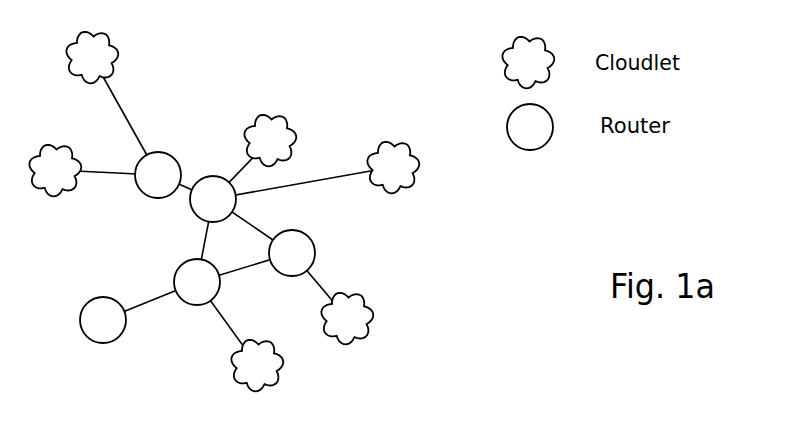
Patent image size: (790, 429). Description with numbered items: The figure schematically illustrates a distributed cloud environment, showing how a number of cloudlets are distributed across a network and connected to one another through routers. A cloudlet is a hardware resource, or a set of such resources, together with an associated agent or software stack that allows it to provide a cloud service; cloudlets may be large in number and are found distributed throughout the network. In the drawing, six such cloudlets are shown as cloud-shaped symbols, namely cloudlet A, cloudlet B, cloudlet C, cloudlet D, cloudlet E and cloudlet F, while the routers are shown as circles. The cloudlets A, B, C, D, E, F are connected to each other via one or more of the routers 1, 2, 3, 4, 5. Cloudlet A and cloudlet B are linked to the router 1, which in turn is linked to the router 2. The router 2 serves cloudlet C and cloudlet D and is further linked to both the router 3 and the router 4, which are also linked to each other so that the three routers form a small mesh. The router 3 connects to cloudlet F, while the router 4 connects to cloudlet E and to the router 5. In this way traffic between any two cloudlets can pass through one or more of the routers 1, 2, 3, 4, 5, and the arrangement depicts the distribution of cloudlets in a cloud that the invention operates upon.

The router 1 is at (158, 175).
The router 2 is at (213, 199).
The router 3 is at (292, 253).
The router 4 is at (197, 282).
The router 5 is at (103, 320).
The cloudlet A is at (55, 171).
The cloudlet B is at (92, 58).
The cloudlet C is at (270, 140).
The cloudlet D is at (393, 168).
The cloudlet E is at (257, 366).
The cloudlet F is at (347, 319).